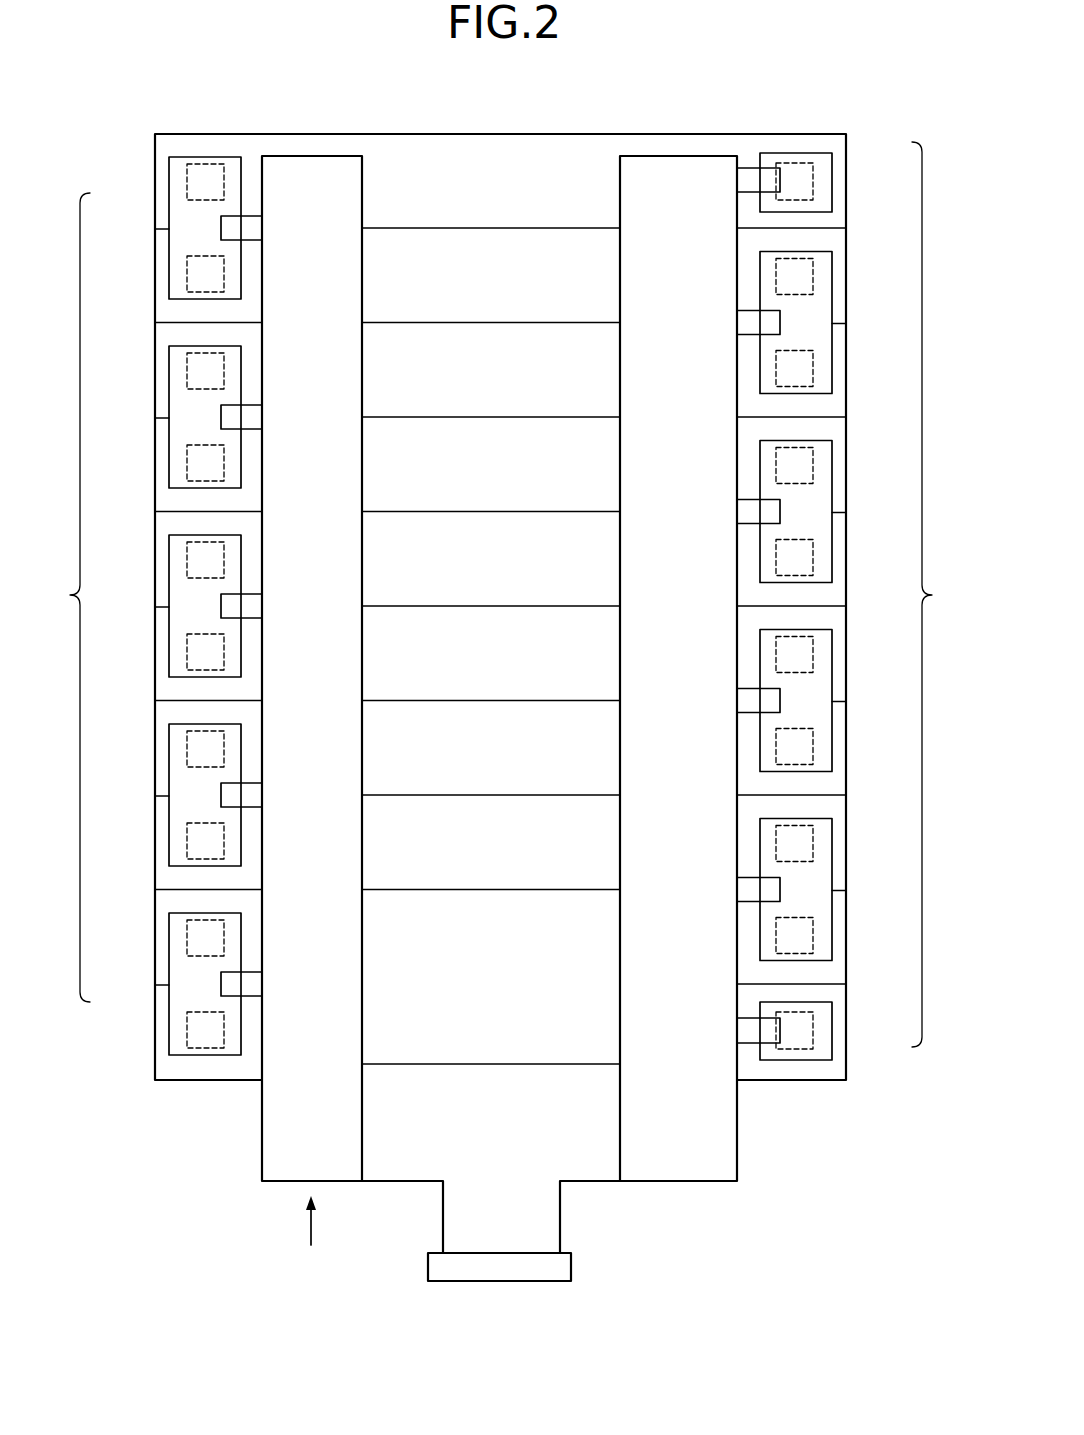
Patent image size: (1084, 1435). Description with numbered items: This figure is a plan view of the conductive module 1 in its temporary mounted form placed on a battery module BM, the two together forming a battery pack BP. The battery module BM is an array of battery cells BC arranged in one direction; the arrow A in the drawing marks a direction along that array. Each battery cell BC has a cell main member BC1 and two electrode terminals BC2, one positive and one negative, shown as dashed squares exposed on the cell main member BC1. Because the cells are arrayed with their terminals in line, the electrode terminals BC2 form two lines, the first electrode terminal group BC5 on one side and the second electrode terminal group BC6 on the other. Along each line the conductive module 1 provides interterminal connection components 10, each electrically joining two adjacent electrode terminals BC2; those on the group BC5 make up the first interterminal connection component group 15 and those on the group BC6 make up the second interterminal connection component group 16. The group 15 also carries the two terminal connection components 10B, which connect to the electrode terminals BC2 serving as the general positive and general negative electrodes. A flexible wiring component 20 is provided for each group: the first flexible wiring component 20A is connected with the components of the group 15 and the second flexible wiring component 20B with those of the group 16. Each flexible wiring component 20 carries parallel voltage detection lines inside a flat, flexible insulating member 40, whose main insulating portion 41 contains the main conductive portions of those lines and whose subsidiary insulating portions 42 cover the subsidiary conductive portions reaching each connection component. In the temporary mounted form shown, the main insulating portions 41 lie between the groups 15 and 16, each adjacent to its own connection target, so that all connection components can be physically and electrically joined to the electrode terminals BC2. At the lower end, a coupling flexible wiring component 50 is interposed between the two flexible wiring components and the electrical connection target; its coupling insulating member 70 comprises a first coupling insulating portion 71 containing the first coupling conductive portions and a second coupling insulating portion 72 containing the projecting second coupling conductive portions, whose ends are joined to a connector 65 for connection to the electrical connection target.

The conductive module 1 is at (591, 1280).
The battery pack BP is at (527, 124).
The battery module BM is at (500, 577).
The interterminal connection component 10 is at (503, 606).
The terminal connection component 10B is at (832, 158).
The first interterminal connection component group 15 is at (938, 594).
The second interterminal connection component group 16 is at (67, 597).
The flexible wiring component 20 is at (505, 639).
The first flexible wiring component 20A is at (688, 147).
The second flexible wiring component 20B is at (313, 147).
The insulating member 40 is at (381, 169).
The main insulating portion 41 is at (362, 205).
The subsidiary insulating portion 42 is at (500, 629).
The coupling flexible wiring component 50 is at (615, 1217).
The connector 65 is at (428, 1268).
The coupling insulating member 70 is at (377, 1200).
The first coupling insulating portion 71 is at (586, 1183).
The second coupling insulating portion 72 is at (443, 1242).
The direction A is at (303, 1220).
The battery cell BC is at (501, 609).
The cell main member BC1 is at (846, 148).
The electrode terminal BC2 is at (501, 616).
The first electrode terminal group BC5 is at (796, 1099).
The second electrode terminal group BC6 is at (204, 1099).